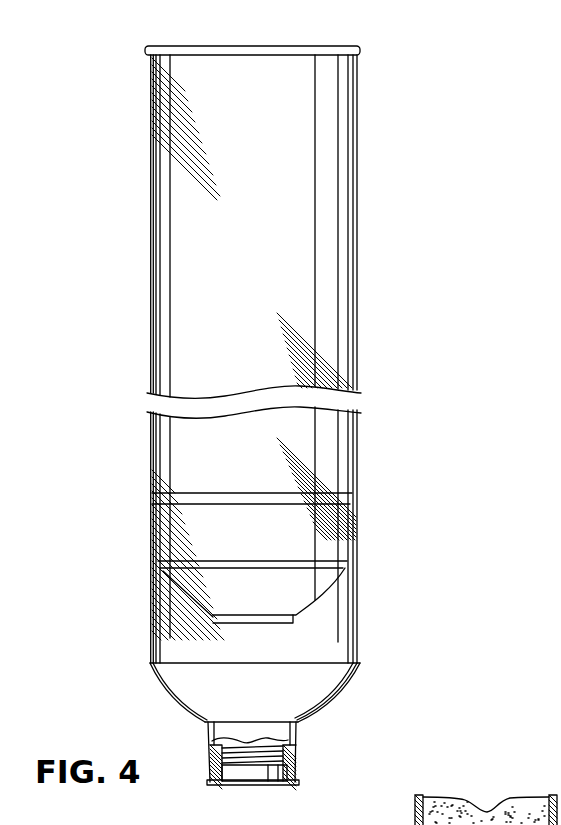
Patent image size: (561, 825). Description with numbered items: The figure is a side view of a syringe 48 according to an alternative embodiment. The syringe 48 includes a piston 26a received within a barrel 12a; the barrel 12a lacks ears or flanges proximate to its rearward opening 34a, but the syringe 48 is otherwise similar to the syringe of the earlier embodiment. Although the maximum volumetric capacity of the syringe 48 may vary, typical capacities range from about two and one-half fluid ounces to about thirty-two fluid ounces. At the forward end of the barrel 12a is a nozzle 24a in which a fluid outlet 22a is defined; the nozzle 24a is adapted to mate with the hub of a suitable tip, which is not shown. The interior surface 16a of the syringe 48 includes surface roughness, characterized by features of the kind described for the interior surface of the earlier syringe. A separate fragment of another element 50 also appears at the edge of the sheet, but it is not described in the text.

The syringe 48 is at (126, 247).
The barrel 12a is at (357, 250).
The rearward opening 34a is at (162, 52).
The interior surface 16a is at (344, 303).
The piston 26a is at (318, 600).
The nozzle 24a is at (300, 740).
The fluid outlet 22a is at (232, 784).
The substrate 50 is at (486, 810).